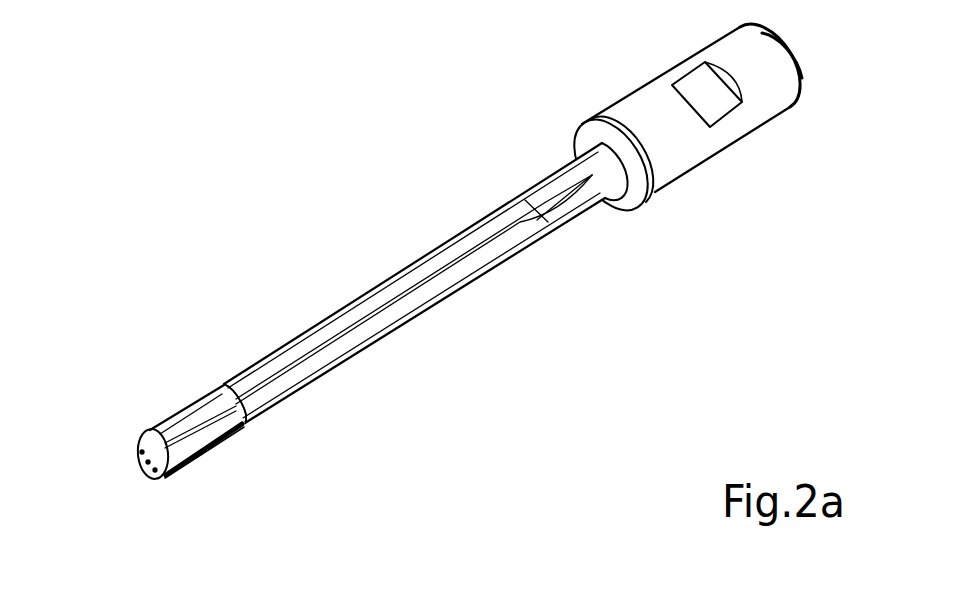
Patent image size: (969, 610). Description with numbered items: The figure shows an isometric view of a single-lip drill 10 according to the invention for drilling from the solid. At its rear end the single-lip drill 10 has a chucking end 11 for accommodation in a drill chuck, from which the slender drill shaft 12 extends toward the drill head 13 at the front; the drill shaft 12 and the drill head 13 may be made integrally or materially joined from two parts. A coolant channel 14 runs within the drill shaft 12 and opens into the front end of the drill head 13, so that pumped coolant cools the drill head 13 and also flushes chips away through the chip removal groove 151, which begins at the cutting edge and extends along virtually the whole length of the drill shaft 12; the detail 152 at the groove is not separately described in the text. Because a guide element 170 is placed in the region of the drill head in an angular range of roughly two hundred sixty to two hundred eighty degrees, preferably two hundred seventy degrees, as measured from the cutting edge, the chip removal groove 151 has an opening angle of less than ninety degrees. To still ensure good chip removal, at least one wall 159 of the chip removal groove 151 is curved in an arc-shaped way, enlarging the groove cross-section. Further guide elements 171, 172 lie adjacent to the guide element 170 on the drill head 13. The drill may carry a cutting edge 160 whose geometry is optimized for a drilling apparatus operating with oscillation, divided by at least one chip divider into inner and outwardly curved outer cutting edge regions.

The single-lip drill 10 is at (433, 294).
The chucking end 11 is at (639, 104).
The drill shaft 12 is at (388, 283).
The drill head 13 is at (216, 442).
The coolant channel 14 is at (156, 496).
The chip removal groove 151 is at (246, 422).
The longitudinal slot 152 is at (422, 270).
The wall of the chip removal groove 159 is at (177, 441).
The cutting edge 160 is at (156, 476).
The guide element 170 is at (160, 416).
The further guide element 171 is at (243, 427).
The further guide element 172 is at (226, 446).